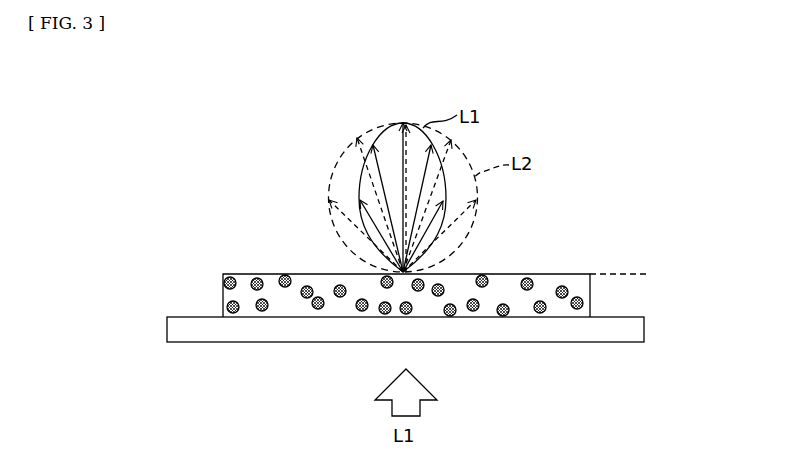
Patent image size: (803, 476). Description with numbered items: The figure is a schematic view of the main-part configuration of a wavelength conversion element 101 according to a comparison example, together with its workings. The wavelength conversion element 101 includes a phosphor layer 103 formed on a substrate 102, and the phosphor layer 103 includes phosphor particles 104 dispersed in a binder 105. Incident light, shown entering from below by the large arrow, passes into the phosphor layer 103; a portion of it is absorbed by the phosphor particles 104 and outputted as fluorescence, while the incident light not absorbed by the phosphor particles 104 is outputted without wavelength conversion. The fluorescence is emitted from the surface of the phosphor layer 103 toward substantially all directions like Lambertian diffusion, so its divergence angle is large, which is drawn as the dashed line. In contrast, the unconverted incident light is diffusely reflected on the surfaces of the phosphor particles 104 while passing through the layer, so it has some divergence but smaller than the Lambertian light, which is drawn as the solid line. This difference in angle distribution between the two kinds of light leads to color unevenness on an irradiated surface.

The wavelength conversion element 101 is at (621, 143).
The substrate 102 is at (637, 329).
The phosphor layer 103 is at (652, 275).
The phosphor particles 104 is at (485, 288).
The binder 105 is at (562, 308).